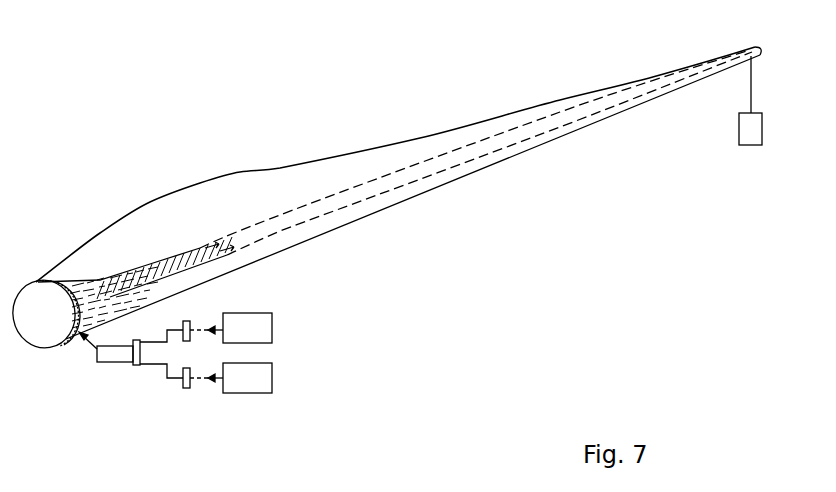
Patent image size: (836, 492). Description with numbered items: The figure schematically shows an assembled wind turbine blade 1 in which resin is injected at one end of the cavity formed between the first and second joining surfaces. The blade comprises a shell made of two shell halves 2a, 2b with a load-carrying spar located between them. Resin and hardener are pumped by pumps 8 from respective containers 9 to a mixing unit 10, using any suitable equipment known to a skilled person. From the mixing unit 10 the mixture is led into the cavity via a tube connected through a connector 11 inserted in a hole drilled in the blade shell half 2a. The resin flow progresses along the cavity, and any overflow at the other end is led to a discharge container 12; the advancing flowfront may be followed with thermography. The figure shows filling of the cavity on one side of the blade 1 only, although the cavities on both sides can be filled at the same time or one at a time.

The wind turbine blade 1 is at (533, 73).
The blade shell half 2a is at (184, 206).
The blade shell half 2b is at (54, 268).
The pump 8 is at (188, 321).
The container 9 is at (257, 320).
The mixing unit 10 is at (118, 360).
The connector 11 is at (79, 343).
The discharge container 12 is at (742, 132).